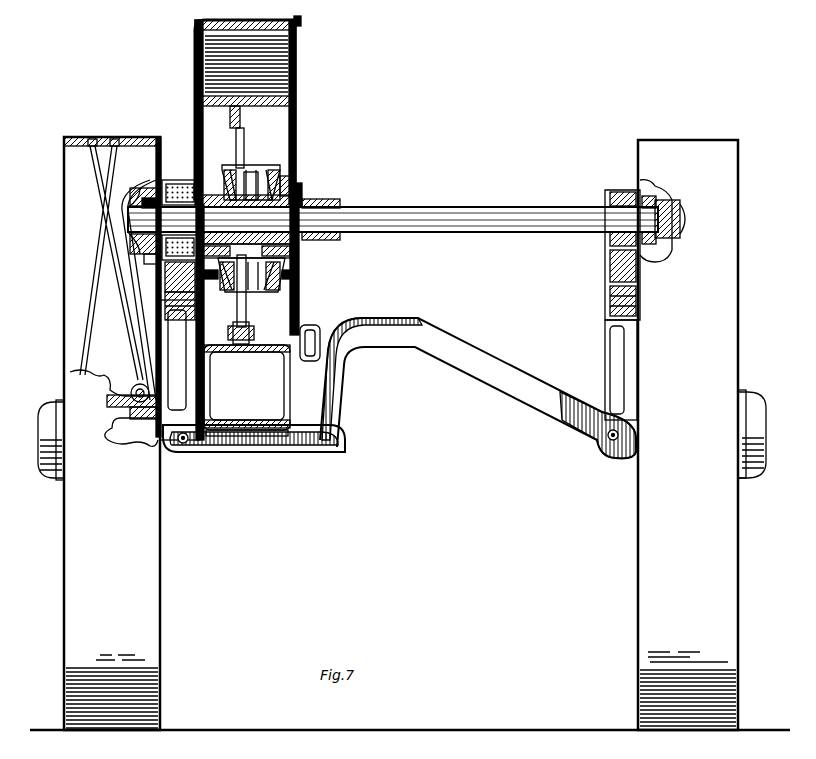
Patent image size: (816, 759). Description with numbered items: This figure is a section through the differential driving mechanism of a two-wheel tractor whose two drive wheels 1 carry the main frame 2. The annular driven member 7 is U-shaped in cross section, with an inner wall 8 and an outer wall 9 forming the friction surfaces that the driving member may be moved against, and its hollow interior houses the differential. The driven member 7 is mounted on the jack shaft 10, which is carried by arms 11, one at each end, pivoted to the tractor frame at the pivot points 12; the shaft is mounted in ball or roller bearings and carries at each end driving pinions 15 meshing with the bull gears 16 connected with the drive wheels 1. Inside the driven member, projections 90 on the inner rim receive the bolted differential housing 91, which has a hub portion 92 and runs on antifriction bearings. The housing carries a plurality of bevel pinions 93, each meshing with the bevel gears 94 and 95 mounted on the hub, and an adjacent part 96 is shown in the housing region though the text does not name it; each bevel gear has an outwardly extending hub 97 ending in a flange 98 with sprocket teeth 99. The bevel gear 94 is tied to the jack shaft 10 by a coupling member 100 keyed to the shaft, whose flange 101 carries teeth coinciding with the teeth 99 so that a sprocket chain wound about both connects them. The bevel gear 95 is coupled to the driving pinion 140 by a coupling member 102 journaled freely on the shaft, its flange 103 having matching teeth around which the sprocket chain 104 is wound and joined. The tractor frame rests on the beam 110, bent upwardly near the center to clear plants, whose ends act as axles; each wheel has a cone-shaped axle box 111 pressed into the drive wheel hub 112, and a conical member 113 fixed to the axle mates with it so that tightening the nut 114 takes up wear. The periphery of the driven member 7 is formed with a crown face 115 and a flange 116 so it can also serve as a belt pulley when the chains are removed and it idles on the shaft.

The drive wheels 1 is at (145, 628).
The main frame 2 is at (318, 344).
The annular driven member 7 is at (256, 410).
The inner wall 8 is at (262, 350).
The outer wall 9 is at (230, 420).
The jack shaft 10 is at (440, 226).
The arms 11 is at (162, 268).
The pivot points 12 is at (166, 292).
The driving pinions 15 is at (130, 246).
The bull gears 16 is at (150, 178).
The projections 90 is at (230, 118).
The differential housing 91 is at (228, 162).
The hub portion 92 is at (300, 260).
The bevel pinions 93 is at (300, 292).
The bevel gear 94 is at (290, 178).
The bevel gear 95 is at (222, 168).
The gear hub 96 is at (258, 164).
The hub 97 is at (192, 180).
The flange 98 is at (300, 190).
The sprocket teeth 99 is at (300, 276).
The coupling member 100 is at (340, 212).
The flange 101 is at (320, 210).
The coupling member 102 is at (126, 211).
The flange 103 is at (180, 213).
The sprocket chain 104 is at (228, 336).
The beam 110 is at (558, 378).
The axle box 111 is at (118, 428).
The drive wheel hubs 112 is at (132, 380).
The conical member 113 is at (168, 455).
The nut 114 is at (48, 468).
The crown face 115 is at (258, 20).
The flange 116 is at (298, 24).
The driving pinion 140 is at (130, 262).